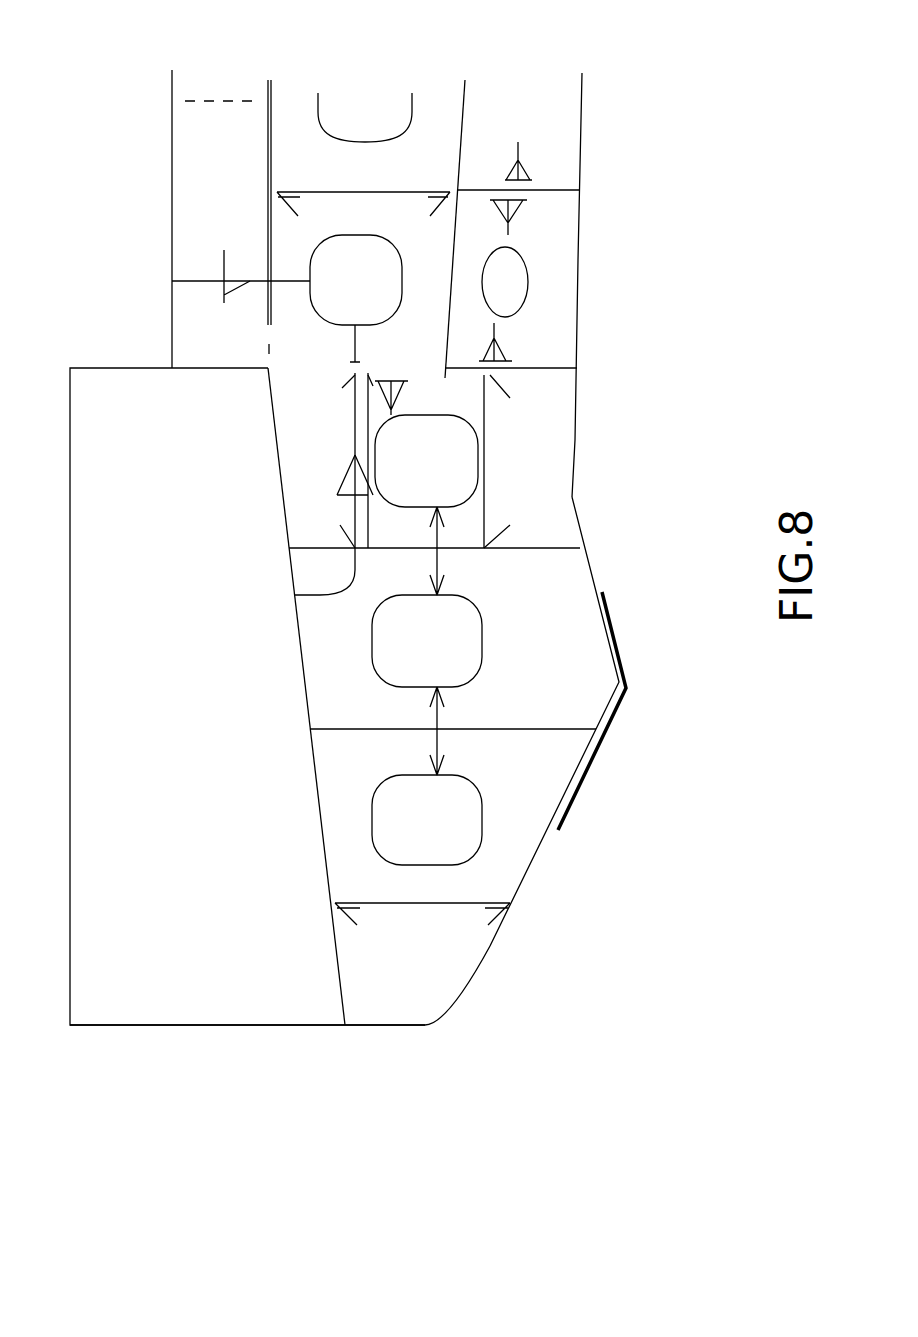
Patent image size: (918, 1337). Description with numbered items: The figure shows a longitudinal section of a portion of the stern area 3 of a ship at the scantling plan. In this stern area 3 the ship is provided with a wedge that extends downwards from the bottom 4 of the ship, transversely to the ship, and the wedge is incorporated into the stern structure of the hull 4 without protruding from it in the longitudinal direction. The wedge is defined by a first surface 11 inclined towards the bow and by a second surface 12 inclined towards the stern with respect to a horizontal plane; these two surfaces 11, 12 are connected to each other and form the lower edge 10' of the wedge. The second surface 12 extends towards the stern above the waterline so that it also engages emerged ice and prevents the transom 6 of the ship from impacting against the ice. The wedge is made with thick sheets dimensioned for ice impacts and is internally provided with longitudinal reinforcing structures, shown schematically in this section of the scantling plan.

The stern area 3 is at (352, 1070).
The bottom of the ship 4 is at (578, 298).
The transom 6 is at (170, 1025).
The lower edge 10' is at (645, 711).
The first surface 11 is at (591, 563).
The second surface 12 is at (492, 950).